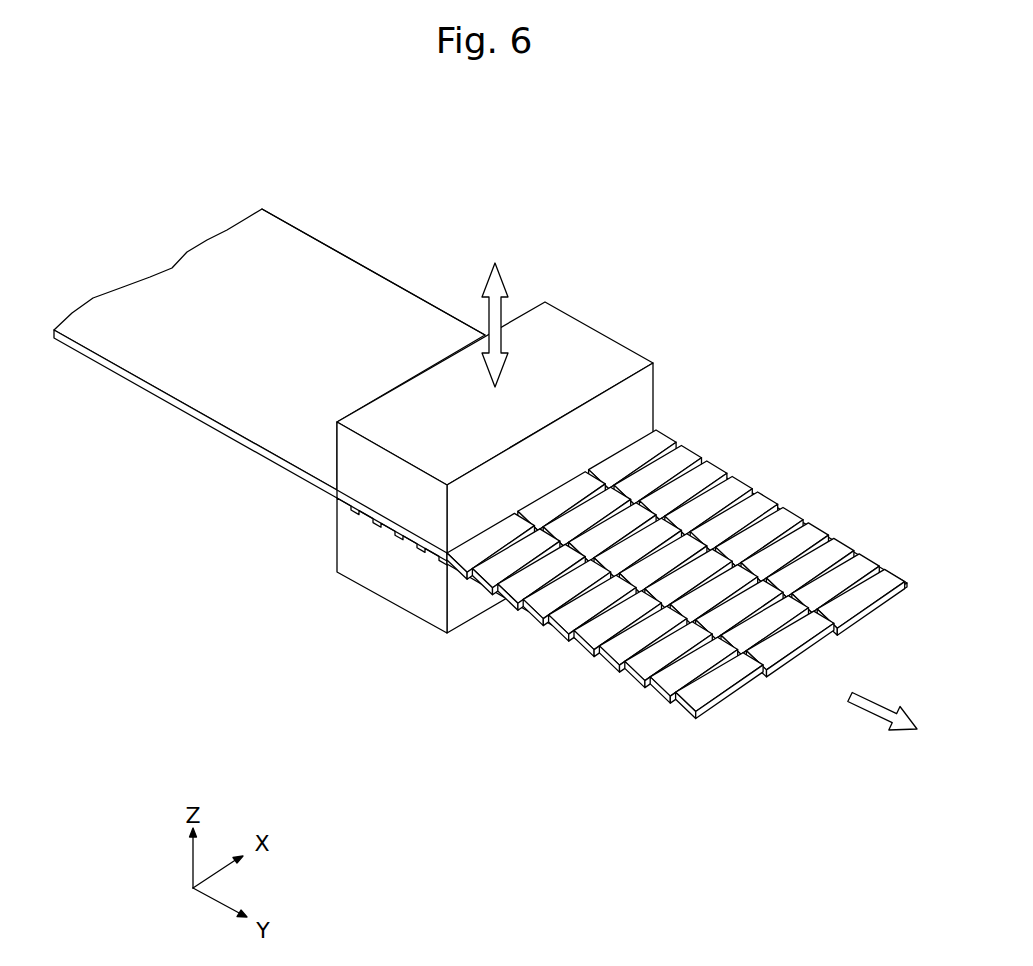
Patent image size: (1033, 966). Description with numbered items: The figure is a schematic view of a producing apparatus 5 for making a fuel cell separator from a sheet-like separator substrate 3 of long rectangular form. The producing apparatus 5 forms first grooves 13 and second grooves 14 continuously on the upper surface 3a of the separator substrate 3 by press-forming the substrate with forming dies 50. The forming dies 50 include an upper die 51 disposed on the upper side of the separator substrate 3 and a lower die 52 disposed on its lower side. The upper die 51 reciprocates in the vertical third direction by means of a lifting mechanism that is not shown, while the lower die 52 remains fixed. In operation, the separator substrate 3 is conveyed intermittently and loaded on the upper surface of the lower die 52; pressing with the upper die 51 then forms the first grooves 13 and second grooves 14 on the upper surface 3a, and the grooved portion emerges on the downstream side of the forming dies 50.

The separator substrate 3 is at (208, 283).
The upper surface 3a is at (368, 312).
The producing apparatus 5 is at (441, 450).
The forming dies 50 is at (602, 357).
The upper die 51 is at (375, 473).
The lower die 52 is at (397, 573).
The first grooves 13 is at (787, 537).
The second grooves 14 is at (762, 660).